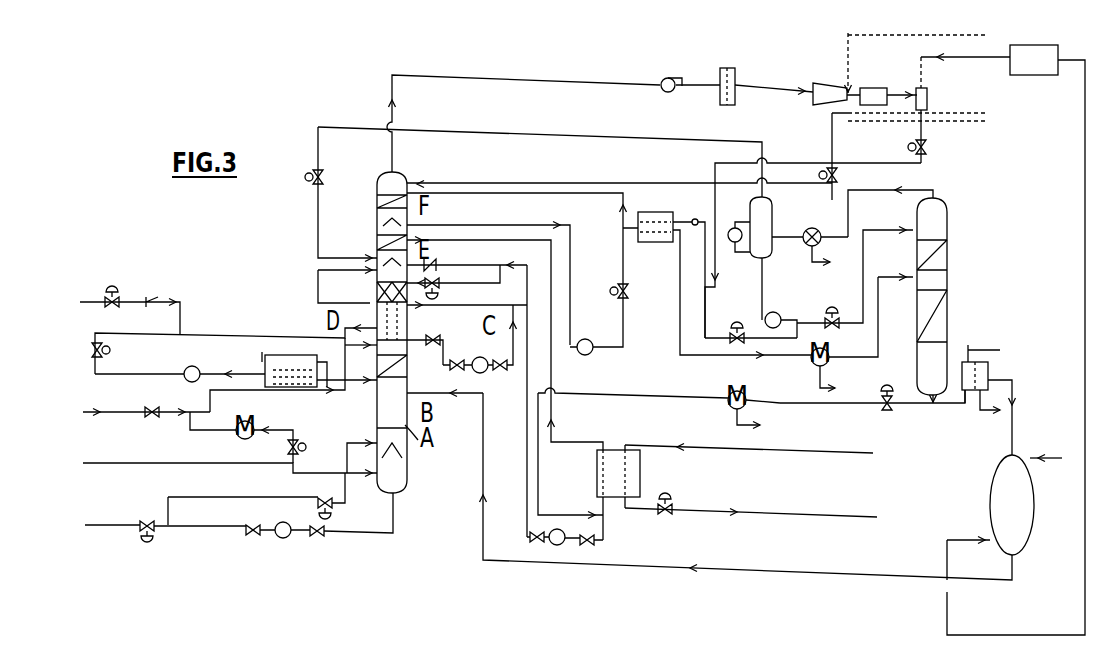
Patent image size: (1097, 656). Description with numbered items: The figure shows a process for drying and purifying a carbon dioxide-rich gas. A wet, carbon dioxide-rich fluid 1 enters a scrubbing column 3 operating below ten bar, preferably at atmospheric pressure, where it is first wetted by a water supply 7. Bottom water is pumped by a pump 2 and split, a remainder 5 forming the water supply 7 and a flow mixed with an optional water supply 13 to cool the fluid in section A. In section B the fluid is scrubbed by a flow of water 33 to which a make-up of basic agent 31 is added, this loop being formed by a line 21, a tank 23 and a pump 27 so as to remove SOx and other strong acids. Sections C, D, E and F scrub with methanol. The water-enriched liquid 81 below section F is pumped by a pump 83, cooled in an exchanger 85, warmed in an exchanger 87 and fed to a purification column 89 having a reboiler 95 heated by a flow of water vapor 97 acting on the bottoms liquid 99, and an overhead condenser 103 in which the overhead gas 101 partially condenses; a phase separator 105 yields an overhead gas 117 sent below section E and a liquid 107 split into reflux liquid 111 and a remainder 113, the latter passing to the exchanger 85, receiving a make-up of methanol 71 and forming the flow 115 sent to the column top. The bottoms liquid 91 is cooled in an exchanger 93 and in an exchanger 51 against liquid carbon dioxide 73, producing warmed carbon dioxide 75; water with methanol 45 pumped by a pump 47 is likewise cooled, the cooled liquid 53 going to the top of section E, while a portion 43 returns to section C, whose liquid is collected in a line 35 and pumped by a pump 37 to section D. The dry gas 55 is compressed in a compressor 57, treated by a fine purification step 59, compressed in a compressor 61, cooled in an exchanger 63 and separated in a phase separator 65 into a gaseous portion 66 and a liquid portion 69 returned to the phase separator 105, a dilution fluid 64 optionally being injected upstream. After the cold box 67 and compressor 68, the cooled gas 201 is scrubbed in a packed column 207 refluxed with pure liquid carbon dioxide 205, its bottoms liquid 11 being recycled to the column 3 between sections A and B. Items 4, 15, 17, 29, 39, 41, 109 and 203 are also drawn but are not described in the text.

The carbon dioxide-rich and wet fluid 1 is at (160, 463).
The pump 2 is at (283, 522).
The scrubbing column 3 is at (377, 205).
The bottom line 4 is at (395, 513).
The remainder of pumped water 5 is at (240, 497).
The water supply 7 is at (347, 485).
The bottoms liquid from packed column 11 is at (483, 455).
The water supply 13 is at (135, 412).
The line 15 is at (268, 391).
The line 17 is at (347, 398).
The line 21 is at (361, 358).
The tank 23 is at (302, 355).
The pump 27 is at (208, 363).
The line 29 is at (168, 366).
The make-up of basic agent 31 is at (190, 302).
The flow of water 33 is at (233, 336).
The line 35 is at (428, 357).
The pump 37 is at (479, 374).
The pump 39 is at (490, 357).
The line 41 is at (458, 266).
The portion of liquid 43 is at (476, 287).
The water with methanol 45 is at (527, 485).
The pump 47 is at (552, 546).
The exchanger 51 is at (597, 474).
The cooled liquid 53 is at (556, 378).
The gas 55 is at (521, 77).
The compressor 57 is at (668, 78).
The fine purification step 59 is at (738, 80).
The compressor 61 is at (830, 86).
The exchanger 63 is at (875, 88).
The dilution fluid 64 is at (848, 76).
The phase separator 65 is at (928, 100).
The gaseous portion 66 is at (933, 59).
The cold box 67 is at (850, 35).
The compressor 68 is at (1032, 45).
The liquid portion 69 is at (833, 143).
The make-up of methanol 71 is at (932, 163).
The flow of liquid carbon dioxide 73 is at (792, 451).
The warmed carbon dioxide 75 is at (820, 514).
The water-enriched liquid 81 is at (534, 225).
The pump 83 is at (585, 339).
The exchanger 85 is at (662, 242).
The exchanger 87 is at (811, 362).
The purification column 89 is at (948, 318).
The bottoms liquid 91 is at (912, 408).
The exchanger 93 is at (762, 425).
The reboiler 95 is at (990, 390).
The flow of water vapor 97 is at (975, 345).
The bottoms liquid 99 is at (950, 404).
The overhead gas 101 is at (926, 190).
The overhead condenser 103 is at (812, 228).
The phase separator 105 is at (750, 218).
The liquid 107 is at (773, 312).
The valve 109 is at (800, 313).
The reflux liquid 111 is at (878, 277).
The remainder of liquid 113 is at (805, 338).
The flow 115 is at (690, 220).
The overhead gas 117 is at (652, 136).
The cooled gas 201 is at (968, 540).
The line 203 is at (1005, 438).
The pure liquid carbon dioxide 205 is at (1046, 458).
The packed column 207 is at (1033, 523).